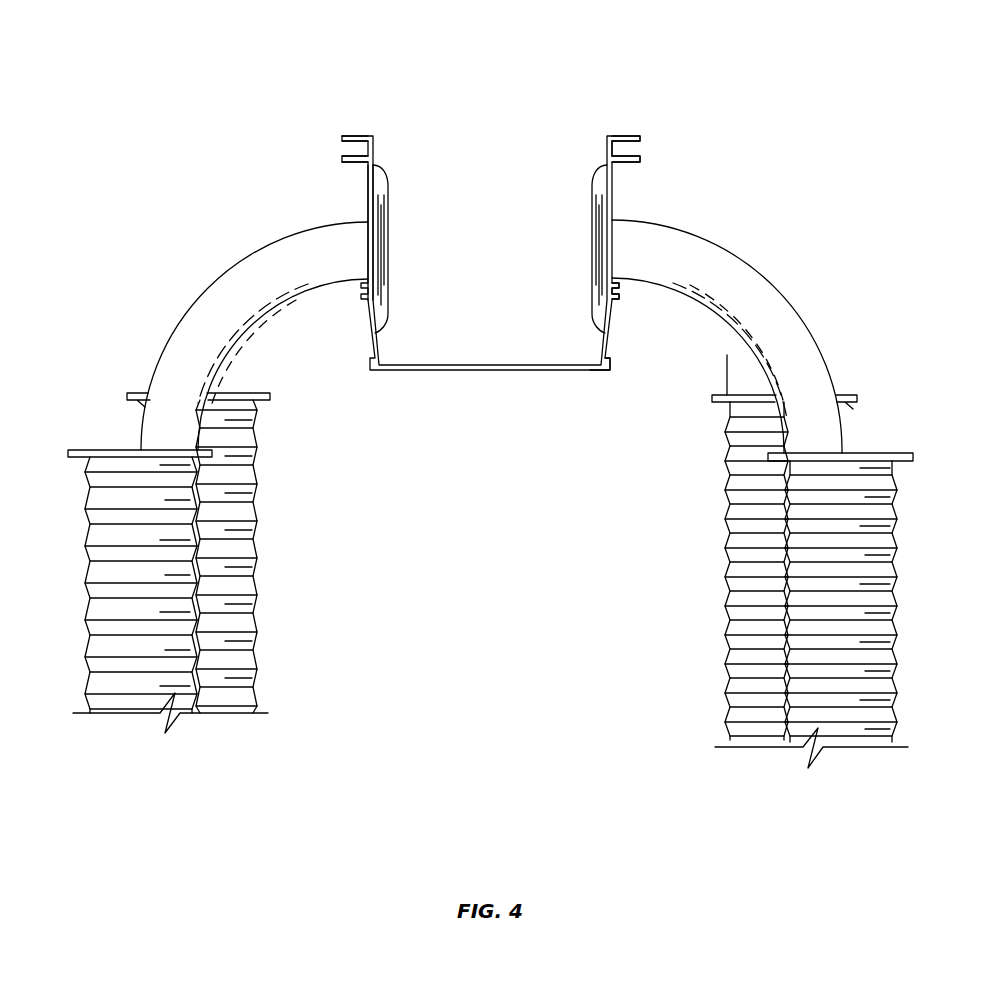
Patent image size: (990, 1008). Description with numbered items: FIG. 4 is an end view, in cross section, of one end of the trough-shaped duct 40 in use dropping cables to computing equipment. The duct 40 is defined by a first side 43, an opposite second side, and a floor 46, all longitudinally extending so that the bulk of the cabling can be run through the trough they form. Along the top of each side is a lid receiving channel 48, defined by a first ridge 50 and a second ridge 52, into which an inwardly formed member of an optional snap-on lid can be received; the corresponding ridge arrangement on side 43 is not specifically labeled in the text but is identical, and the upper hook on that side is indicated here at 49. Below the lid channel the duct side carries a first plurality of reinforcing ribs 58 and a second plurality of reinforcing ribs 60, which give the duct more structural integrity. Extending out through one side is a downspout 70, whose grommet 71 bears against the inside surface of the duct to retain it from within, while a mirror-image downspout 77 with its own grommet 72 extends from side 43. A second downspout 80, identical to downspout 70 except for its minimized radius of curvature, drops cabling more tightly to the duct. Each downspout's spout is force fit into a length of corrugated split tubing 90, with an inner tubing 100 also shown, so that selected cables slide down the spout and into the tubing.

The duct 40 is at (420, 54).
The first side 43 is at (368, 212).
The floor 46 is at (428, 365).
The first lid receiving channel 48 is at (632, 151).
The left hook flange 49 is at (348, 150).
The first ridge 50 is at (641, 140).
The second ridge 52 is at (641, 160).
The first plurality of reinforcing ribs 58 is at (620, 290).
The second plurality of reinforcing ribs 60 is at (611, 365).
The downspout 70 is at (790, 327).
The grommet 71 is at (593, 262).
The grommet 72 is at (389, 262).
The downspout 77 is at (212, 286).
The second downspout 80 is at (732, 357).
The split tubing 90 is at (897, 591).
The inner bellows 100 is at (727, 591).